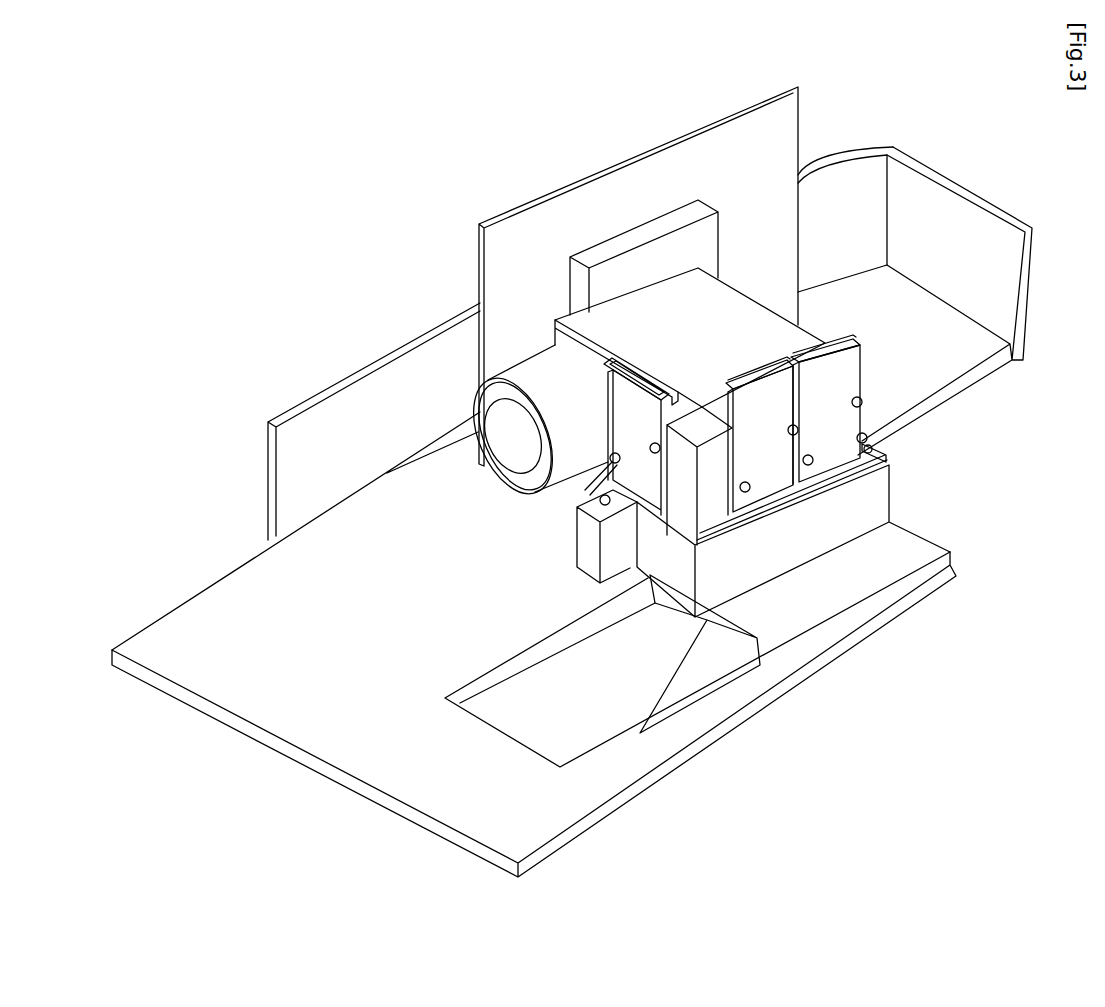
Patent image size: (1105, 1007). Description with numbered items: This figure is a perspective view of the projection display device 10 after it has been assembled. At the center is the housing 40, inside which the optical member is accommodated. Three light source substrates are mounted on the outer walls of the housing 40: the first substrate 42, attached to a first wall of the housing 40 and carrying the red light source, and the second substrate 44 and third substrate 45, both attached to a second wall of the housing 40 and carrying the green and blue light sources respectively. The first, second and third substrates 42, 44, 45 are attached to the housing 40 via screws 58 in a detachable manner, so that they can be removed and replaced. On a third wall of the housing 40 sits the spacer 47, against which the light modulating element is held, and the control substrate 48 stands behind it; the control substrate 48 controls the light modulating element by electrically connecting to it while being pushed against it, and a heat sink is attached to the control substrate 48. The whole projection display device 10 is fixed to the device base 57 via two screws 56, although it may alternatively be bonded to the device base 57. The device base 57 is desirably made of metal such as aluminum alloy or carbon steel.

The projection display device 10 is at (815, 328).
The housing 40 is at (742, 310).
The first substrate 42 is at (625, 415).
The second substrate 44 is at (773, 487).
The third substrate 45 is at (833, 453).
The spacer 47 is at (665, 223).
The control substrate 48 is at (582, 208).
The screw 56 is at (600, 522).
The device base 57 is at (883, 494).
The screw 58 is at (865, 403).